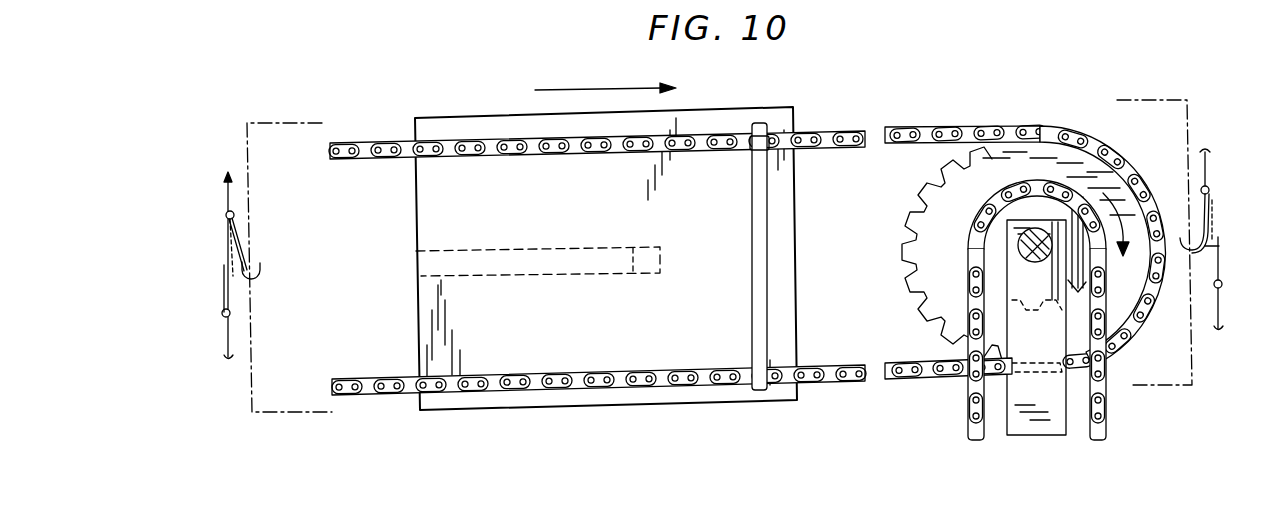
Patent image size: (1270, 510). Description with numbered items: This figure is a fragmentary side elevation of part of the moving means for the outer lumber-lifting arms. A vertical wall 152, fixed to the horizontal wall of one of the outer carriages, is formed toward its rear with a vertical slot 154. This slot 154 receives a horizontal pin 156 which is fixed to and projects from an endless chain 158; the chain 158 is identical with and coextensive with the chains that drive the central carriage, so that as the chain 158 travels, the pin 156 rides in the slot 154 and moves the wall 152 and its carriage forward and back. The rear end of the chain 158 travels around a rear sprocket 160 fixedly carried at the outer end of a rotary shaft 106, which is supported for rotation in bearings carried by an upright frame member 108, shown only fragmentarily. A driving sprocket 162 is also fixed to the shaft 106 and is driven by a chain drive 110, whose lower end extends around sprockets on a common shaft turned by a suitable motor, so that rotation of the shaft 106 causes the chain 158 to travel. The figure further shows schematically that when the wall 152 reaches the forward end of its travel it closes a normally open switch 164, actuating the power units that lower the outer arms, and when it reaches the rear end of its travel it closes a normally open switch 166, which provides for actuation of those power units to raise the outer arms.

The rotary shaft 106 is at (1025, 251).
The upright frame member 108 is at (1055, 412).
The chain drive 110 is at (1097, 360).
The vertical wall 152 is at (476, 130).
The vertical slot 154 is at (768, 231).
The horizontal pin 156 is at (758, 151).
The endless chain 158 is at (372, 380).
The rear sprocket 160 is at (1029, 150).
The driving sprocket 162 is at (993, 233).
The normally open switch 164 is at (200, 246).
The normally open switch 166 is at (1250, 188).